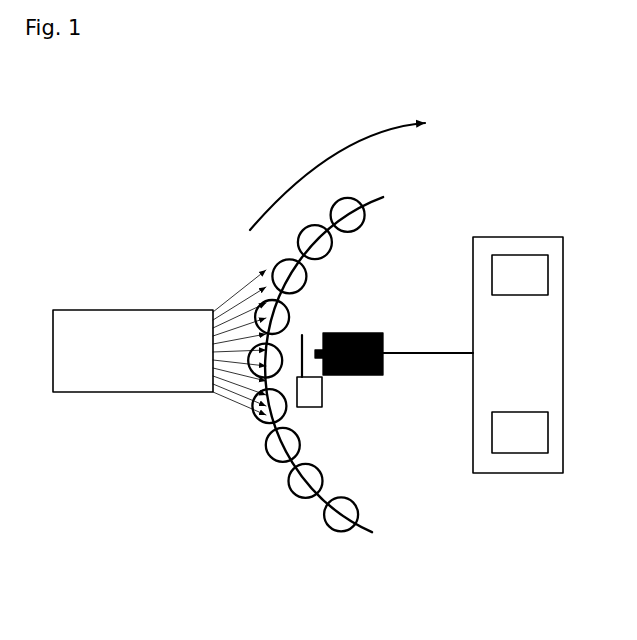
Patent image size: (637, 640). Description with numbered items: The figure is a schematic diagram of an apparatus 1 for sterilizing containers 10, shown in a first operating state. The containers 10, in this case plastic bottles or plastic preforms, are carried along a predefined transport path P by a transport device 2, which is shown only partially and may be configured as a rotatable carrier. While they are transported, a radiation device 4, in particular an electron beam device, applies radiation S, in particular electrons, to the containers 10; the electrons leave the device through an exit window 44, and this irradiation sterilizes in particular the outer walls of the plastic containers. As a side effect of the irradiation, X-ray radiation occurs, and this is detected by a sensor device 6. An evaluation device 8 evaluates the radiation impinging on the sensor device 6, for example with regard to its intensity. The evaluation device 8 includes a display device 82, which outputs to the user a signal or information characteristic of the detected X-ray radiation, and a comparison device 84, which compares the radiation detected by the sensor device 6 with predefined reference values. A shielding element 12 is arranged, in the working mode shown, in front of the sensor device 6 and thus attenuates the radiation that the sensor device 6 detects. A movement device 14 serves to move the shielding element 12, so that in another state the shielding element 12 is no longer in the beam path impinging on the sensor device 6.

The apparatus 1 is at (165, 255).
The transport device 2 is at (383, 199).
The radiation device 4 is at (133, 351).
The exit window 44 is at (212, 358).
The sensor device 6 is at (358, 375).
The evaluation device 8 is at (518, 355).
The display device 82 is at (520, 275).
The comparison device 84 is at (520, 432).
The containers 10 is at (272, 460).
The shielding element 12 is at (302, 360).
The movement device 14 is at (313, 393).
The radiation S is at (238, 292).
The transport path P is at (337, 161).